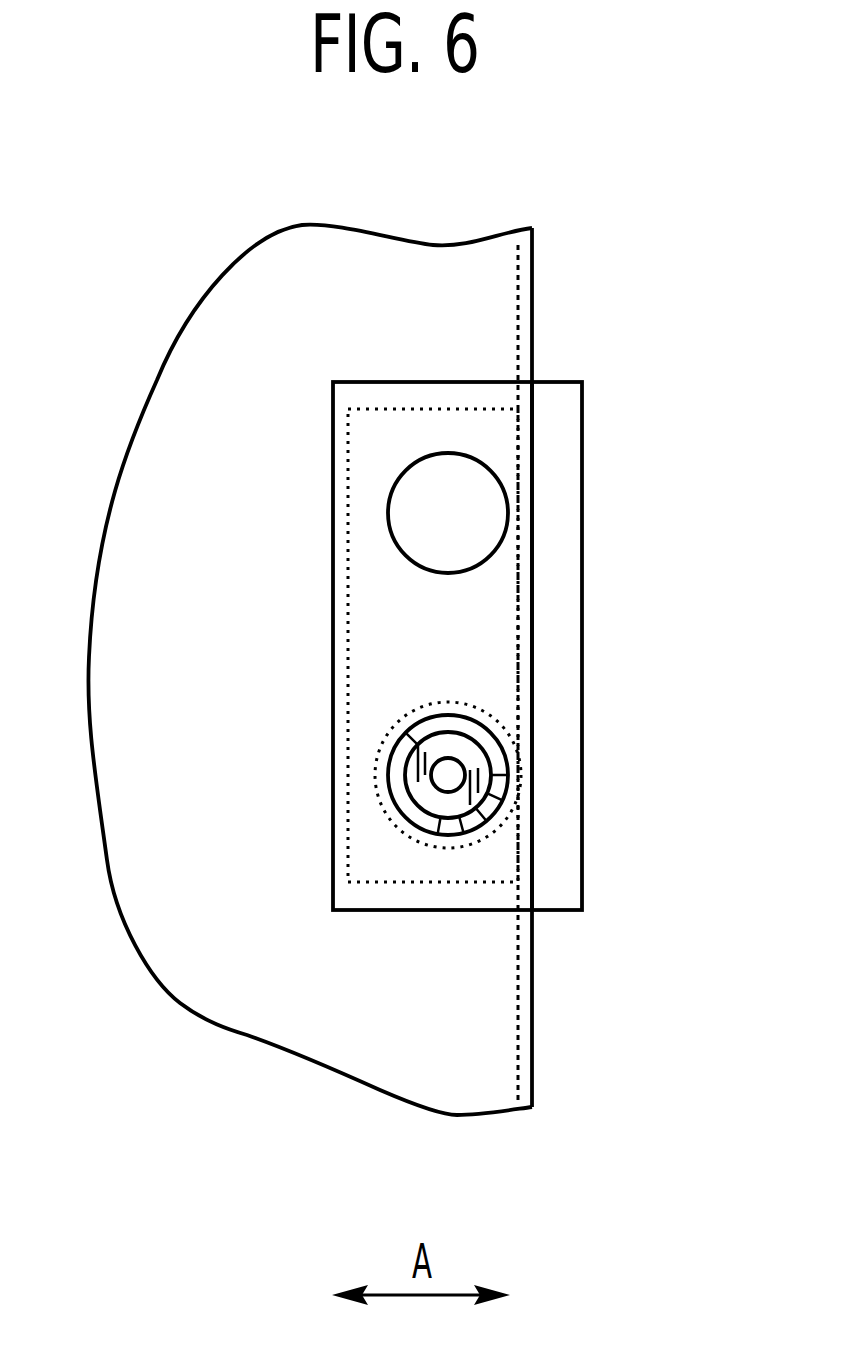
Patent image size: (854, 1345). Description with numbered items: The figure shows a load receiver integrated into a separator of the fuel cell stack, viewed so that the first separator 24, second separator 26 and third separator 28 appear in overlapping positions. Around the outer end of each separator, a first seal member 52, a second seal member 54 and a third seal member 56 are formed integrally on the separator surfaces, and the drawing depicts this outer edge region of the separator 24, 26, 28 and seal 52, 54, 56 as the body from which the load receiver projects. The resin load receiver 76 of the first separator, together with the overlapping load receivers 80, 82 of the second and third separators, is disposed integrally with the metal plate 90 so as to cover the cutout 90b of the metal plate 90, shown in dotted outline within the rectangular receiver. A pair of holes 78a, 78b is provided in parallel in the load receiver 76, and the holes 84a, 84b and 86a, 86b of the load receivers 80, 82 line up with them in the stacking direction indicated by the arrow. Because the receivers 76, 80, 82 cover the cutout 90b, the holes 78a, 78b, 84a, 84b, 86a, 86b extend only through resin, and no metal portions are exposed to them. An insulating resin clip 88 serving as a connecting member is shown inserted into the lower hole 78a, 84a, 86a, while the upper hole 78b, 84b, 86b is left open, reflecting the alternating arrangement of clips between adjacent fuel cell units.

The first separator 24 is at (649, 157).
The second separator 26 is at (724, 157).
The third separator 28 is at (789, 157).
The first seal member 52 is at (532, 1003).
The second seal member 54 is at (636, 667).
The third seal member 56 is at (636, 667).
The load receiver 76 is at (535, 597).
The hole 78a is at (412, 740).
The hole 78b is at (398, 478).
The load receiver 80 is at (585, 503).
The load receiver 82 is at (631, 646).
The hole 84a is at (402, 761).
The hole 84b is at (325, 532).
The hole 86a is at (457, 761).
The hole 86b is at (380, 532).
The resin clip 88 is at (488, 747).
The metal plate 90 is at (498, 980).
The cutout 90b is at (412, 884).